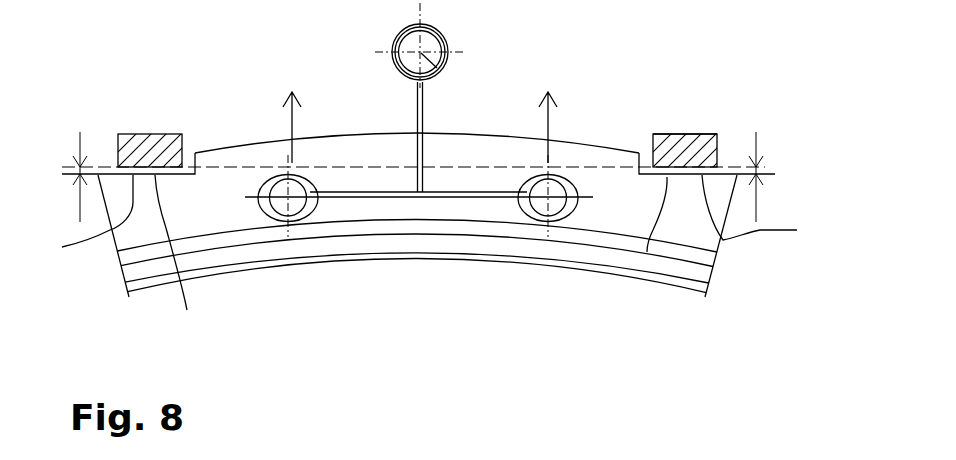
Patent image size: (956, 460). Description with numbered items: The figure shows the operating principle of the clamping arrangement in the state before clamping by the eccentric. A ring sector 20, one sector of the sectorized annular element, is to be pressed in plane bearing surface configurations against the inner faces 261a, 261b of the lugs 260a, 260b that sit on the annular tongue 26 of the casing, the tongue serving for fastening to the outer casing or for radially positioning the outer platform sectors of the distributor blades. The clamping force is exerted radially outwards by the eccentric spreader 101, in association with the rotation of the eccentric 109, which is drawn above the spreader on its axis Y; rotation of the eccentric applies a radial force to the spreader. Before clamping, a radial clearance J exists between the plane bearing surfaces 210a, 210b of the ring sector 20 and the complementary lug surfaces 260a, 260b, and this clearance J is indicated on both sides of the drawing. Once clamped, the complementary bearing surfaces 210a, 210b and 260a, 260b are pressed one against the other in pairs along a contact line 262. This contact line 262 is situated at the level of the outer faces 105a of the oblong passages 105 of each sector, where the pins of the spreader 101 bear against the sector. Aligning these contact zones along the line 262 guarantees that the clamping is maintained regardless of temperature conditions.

The ring sector 20 is at (130, 241).
The annular tongue 26 is at (670, 126).
The eccentric spreader 101 is at (372, 205).
The oblong passage 105 is at (268, 207).
The outer face of oblong passage 105a is at (300, 172).
The eccentric 109 is at (431, 42).
The plane bearing surface 210a is at (323, 197).
The plane bearing surface 210b is at (775, 210).
The lug 260a is at (157, 138).
The lug 260b is at (712, 140).
The inner face of lug 261a is at (187, 310).
The inner face of lug 261b is at (647, 252).
The contact line 262 is at (772, 167).
The radial clearance J is at (412, 170).
The axis Y is at (443, 78).